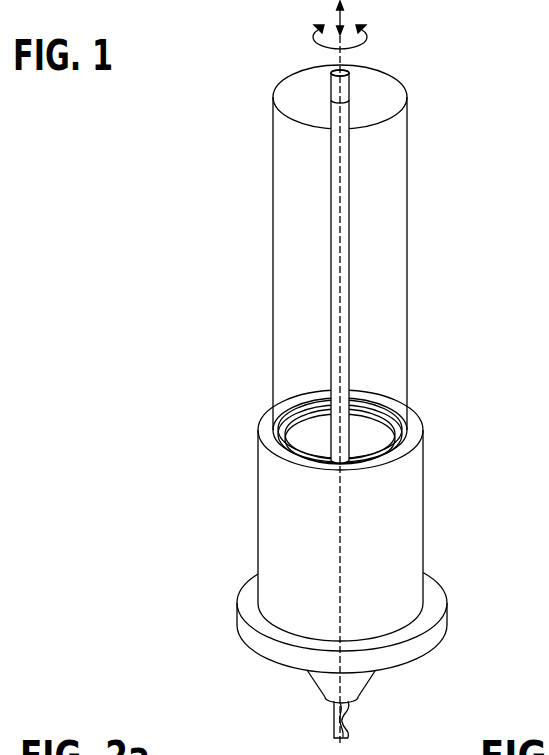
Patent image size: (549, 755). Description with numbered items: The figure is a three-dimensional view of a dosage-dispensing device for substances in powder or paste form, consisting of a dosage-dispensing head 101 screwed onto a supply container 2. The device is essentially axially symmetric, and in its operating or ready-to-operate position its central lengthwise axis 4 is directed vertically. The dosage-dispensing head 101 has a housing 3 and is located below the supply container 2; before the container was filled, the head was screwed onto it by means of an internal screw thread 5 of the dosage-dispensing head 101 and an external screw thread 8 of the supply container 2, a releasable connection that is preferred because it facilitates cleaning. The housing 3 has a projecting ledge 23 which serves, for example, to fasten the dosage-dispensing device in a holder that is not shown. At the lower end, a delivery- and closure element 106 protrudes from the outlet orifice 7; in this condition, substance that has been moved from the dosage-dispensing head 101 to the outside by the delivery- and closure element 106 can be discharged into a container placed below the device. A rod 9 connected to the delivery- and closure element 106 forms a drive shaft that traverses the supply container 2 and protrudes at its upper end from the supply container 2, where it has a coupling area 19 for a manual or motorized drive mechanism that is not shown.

The supply container 2 is at (378, 250).
The housing 3 is at (282, 593).
The central lengthwise axis 4 is at (360, 50).
The internal screw thread 5 is at (377, 400).
The outlet orifice 7 is at (330, 700).
The external screw thread 8 is at (383, 420).
The rod 9 is at (338, 295).
The coupling area 19 is at (337, 92).
The projecting ledge 23 is at (432, 632).
The dosage-dispensing head 101 is at (445, 558).
The delivery- and closure element 106 is at (360, 718).